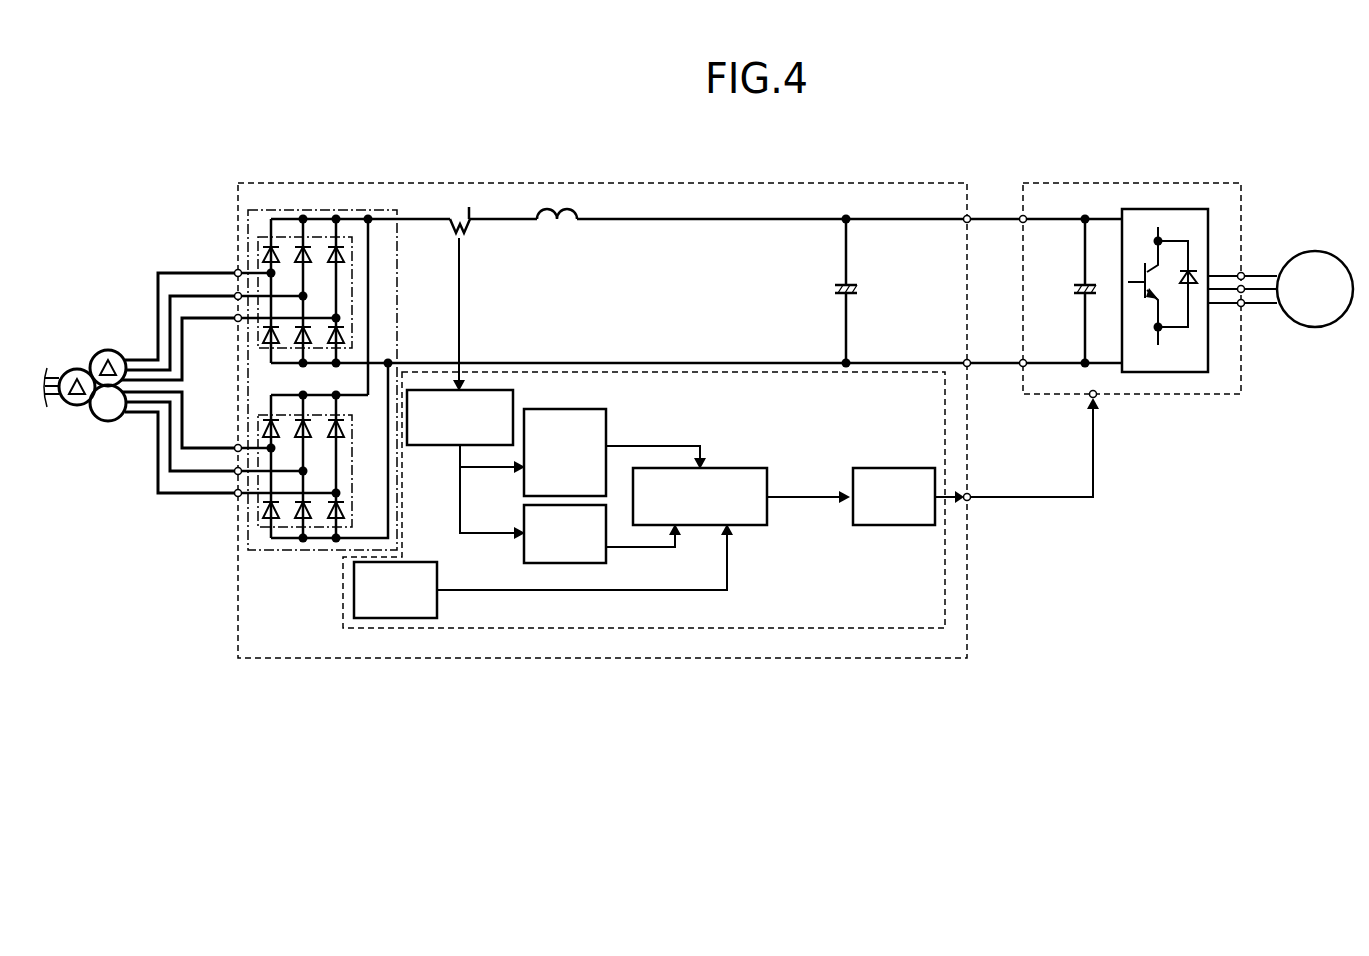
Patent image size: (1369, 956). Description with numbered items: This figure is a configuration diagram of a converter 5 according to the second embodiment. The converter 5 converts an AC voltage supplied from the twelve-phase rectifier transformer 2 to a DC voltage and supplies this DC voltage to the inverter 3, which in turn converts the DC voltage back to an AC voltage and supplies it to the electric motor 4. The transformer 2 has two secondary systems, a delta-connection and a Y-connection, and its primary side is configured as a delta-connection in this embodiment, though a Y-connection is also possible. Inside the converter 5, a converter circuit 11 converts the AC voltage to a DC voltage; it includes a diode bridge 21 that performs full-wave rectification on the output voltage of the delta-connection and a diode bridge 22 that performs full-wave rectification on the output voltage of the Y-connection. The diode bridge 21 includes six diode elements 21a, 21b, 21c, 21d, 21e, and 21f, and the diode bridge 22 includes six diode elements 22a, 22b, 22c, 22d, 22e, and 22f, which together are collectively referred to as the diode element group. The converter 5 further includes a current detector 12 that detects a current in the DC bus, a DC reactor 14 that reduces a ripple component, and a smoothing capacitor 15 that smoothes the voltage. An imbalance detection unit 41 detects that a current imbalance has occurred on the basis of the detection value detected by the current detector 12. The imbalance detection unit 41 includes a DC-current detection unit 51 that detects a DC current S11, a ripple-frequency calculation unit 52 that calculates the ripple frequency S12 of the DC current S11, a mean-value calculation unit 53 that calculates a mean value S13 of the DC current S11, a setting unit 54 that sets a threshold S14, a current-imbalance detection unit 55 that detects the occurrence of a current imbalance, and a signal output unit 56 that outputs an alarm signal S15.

The 12-phase rectifier transformer 2 is at (75, 366).
The inverter 3 is at (1185, 183).
The electric motor 4 is at (1312, 252).
The converter 5 is at (910, 183).
The converter circuit 11 is at (653, 351).
The current detector 12 is at (452, 216).
The DC reactor 14 is at (552, 210).
The smoothing capacitor 15 is at (858, 290).
The diode bridge 21 is at (312, 262).
The diode element 21a is at (265, 251).
The diode element 21b is at (265, 333).
The diode element 21c is at (297, 246).
The diode element 21d is at (300, 349).
The diode element 21e is at (345, 251).
The diode element 21f is at (345, 333).
The diode bridge 22 is at (323, 477).
The diode element 22a is at (265, 428).
The diode element 22b is at (265, 508).
The diode element 22c is at (300, 420).
The diode element 22d is at (300, 530).
The diode element 22e is at (345, 428).
The diode element 22f is at (345, 512).
The imbalance detection unit 41 is at (672, 500).
The DC-current detection unit 51 is at (513, 398).
The ripple-frequency calculation unit 52 is at (592, 410).
The mean-value calculation unit 53 is at (522, 558).
The setting unit 54 is at (437, 603).
The current-imbalance detection unit 55 is at (741, 468).
The signal output unit 56 is at (880, 468).
The DC current S11 is at (462, 502).
The ripple frequency S12 is at (631, 446).
The mean value S13 is at (630, 548).
The threshold S14 is at (668, 592).
The alarm signal S15 is at (1010, 496).